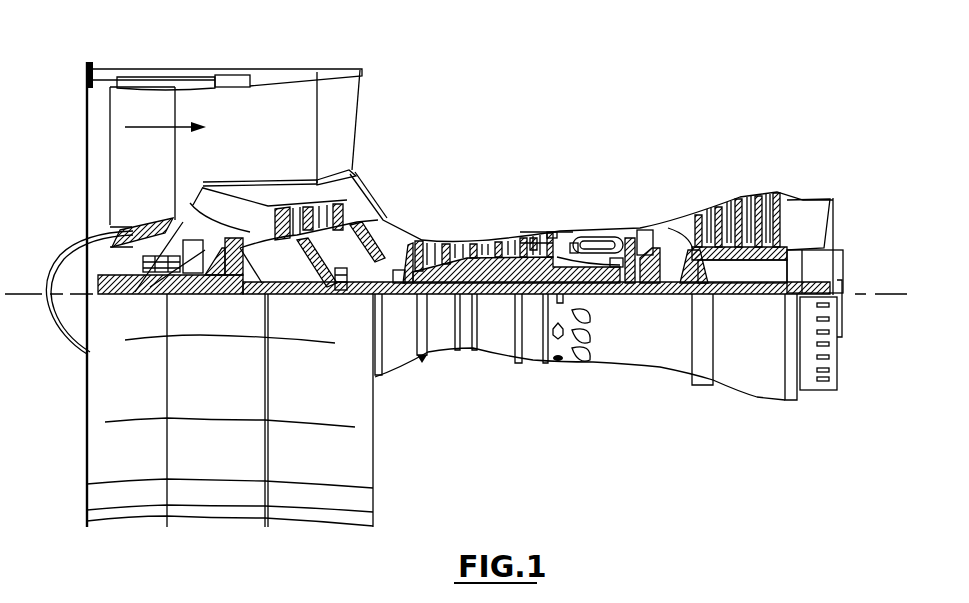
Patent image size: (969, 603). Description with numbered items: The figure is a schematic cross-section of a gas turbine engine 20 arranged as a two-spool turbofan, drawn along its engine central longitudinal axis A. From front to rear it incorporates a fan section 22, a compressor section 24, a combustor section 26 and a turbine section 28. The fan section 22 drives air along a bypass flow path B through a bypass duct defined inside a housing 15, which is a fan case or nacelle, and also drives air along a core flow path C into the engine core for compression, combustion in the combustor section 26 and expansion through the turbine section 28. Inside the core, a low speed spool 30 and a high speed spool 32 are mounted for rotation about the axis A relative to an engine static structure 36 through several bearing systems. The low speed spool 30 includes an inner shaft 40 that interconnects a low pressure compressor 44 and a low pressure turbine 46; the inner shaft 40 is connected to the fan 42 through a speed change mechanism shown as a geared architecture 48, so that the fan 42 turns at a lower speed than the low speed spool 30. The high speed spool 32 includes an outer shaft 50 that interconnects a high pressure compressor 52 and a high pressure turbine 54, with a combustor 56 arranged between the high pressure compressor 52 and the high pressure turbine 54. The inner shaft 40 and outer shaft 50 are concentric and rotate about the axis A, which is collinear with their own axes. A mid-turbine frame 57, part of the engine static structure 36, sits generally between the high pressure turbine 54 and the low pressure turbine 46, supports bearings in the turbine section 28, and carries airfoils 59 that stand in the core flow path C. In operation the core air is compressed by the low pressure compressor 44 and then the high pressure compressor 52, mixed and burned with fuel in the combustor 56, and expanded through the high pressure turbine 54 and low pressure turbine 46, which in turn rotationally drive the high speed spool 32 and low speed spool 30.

The housing 15 is at (230, 69).
The gas turbine engine 20 is at (600, 104).
The fan section 22 is at (174, 58).
The compressor section 24 is at (418, 211).
The combustor section 26 is at (592, 202).
The turbine section 28 is at (723, 163).
The low speed spool 30 is at (498, 306).
The high speed spool 32 is at (534, 240).
The engine static structure 36 is at (530, 368).
The inner shaft 40 is at (390, 300).
The fan 42 is at (128, 168).
The low pressure compressor 44 is at (290, 227).
The low pressure turbine 46 is at (742, 200).
The geared architecture 48 is at (235, 281).
The outer shaft 50 is at (592, 295).
The high pressure compressor 52 is at (483, 239).
The high pressure turbine 54 is at (642, 231).
The combustor 56 is at (591, 246).
The mid-turbine frame 57 is at (686, 204).
The airfoils 59 is at (703, 273).
The engine central longitudinal axis A is at (899, 294).
The bypass flow path B is at (152, 127).
The core flow path C is at (228, 209).